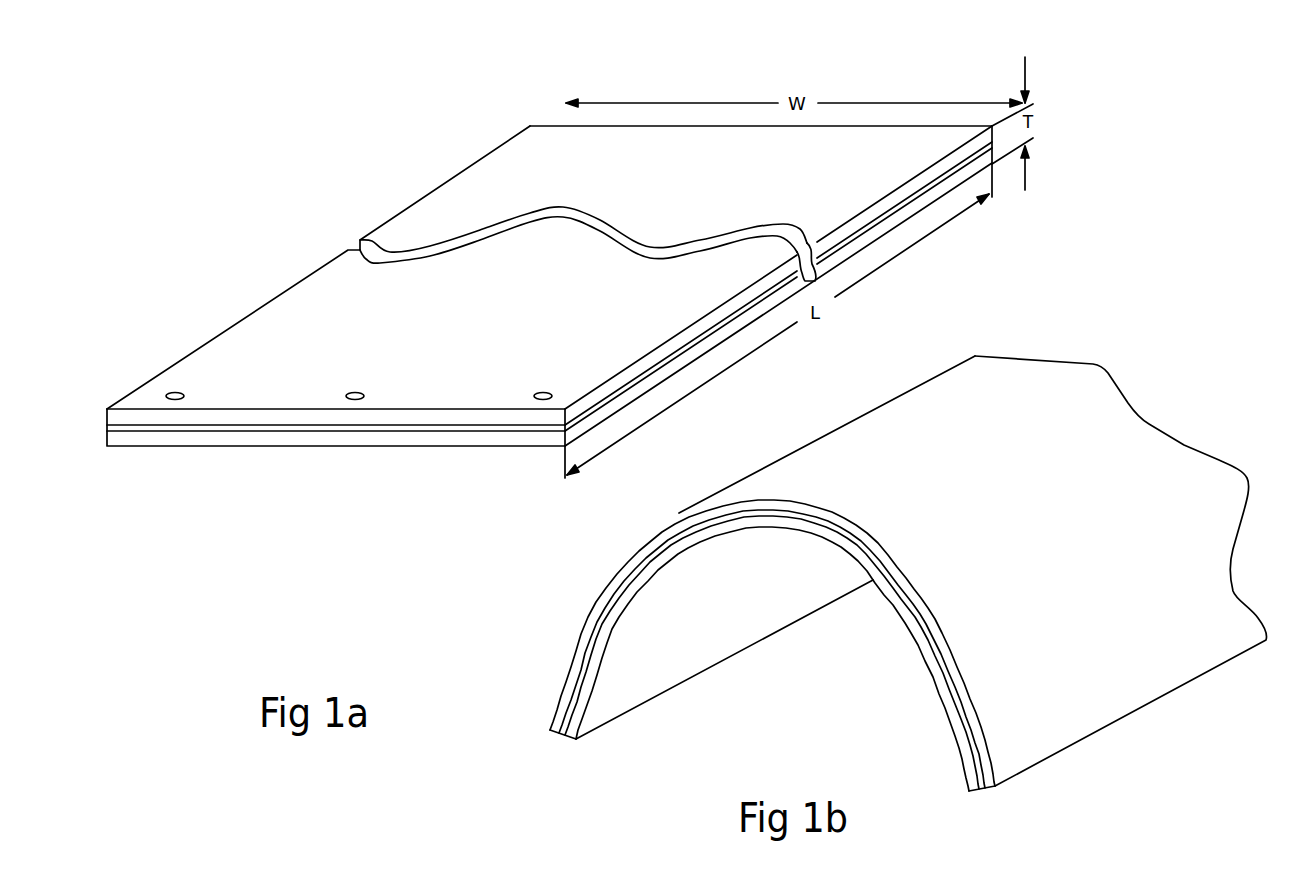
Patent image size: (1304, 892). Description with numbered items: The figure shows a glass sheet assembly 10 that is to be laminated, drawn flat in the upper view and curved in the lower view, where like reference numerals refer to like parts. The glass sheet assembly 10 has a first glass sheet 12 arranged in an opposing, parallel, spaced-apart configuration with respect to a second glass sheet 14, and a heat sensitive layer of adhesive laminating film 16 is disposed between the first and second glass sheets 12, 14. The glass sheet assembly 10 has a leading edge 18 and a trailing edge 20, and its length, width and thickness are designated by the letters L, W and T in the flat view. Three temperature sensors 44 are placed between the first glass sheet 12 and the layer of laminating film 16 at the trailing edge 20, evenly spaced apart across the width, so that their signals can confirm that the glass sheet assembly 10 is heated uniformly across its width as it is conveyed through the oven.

In FIG. 1A, the glass sheet assembly 10 is at (549, 303).
In FIG. 1B, the glass sheet assembly 10 is at (869, 576).
In FIG. 1A, the first glass sheet 12 is at (148, 392).
In FIG. 1B, the first glass sheet 12 is at (555, 700).
In FIG. 1A, the second glass sheet 14 is at (155, 438).
In FIG. 1B, the second glass sheet 14 is at (582, 703).
In FIG. 1A, the layer of adhesive laminating film 16 is at (232, 428).
In FIG. 1B, the layer of adhesive laminating film 16 is at (564, 734).
In FIG. 1A, the leading edge 18 is at (642, 126).
In FIG. 1A, the trailing edge 20 is at (472, 410).
In FIG. 1A, the temperature sensors 44 is at (178, 393).